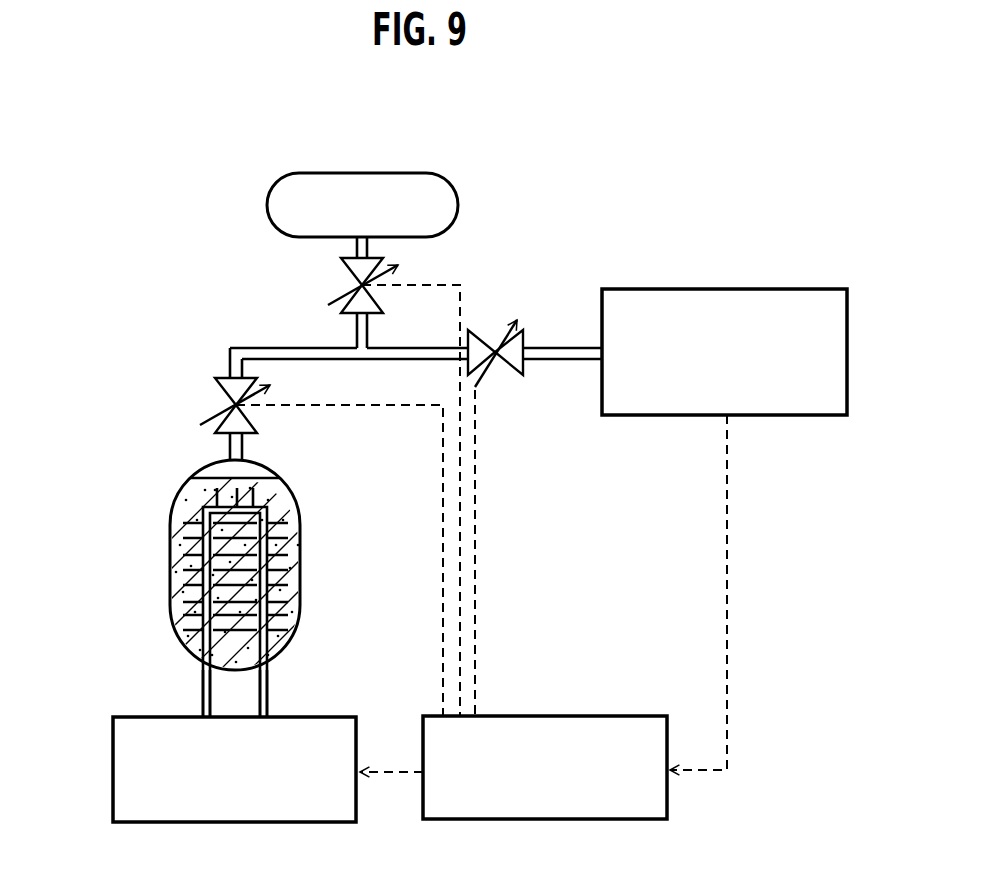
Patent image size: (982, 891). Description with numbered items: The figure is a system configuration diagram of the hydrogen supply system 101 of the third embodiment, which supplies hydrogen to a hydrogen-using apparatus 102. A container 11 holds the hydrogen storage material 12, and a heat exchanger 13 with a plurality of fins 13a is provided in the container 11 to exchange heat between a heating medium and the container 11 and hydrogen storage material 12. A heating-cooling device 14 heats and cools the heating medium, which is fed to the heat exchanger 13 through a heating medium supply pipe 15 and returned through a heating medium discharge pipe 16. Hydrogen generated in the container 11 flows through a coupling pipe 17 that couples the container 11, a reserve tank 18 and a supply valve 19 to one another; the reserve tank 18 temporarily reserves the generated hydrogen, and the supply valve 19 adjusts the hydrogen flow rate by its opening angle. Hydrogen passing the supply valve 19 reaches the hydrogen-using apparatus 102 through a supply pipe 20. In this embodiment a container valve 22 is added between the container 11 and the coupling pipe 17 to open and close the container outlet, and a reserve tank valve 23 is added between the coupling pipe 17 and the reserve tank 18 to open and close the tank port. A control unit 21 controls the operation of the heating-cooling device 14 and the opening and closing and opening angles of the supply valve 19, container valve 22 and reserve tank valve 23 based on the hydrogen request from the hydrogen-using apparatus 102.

The hydrogen supply system 101 is at (134, 196).
The hydrogen-using apparatus 102 is at (690, 289).
The container 11 is at (168, 478).
The hydrogen storage material 12 is at (297, 483).
The heat exchanger 13 is at (263, 530).
The fins 13a is at (280, 590).
The heating-cooling device 14 is at (262, 822).
The heating medium supply pipe 15 is at (204, 700).
The heating medium discharge pipe 16 is at (266, 695).
The coupling pipe 17 is at (288, 348).
The reserve tank 18 is at (376, 173).
The supply valve 19 is at (525, 338).
The supply pipe 20 is at (548, 362).
The control unit 21 is at (545, 819).
The container valve 22 is at (220, 391).
The reserve tank valve 23 is at (343, 279).